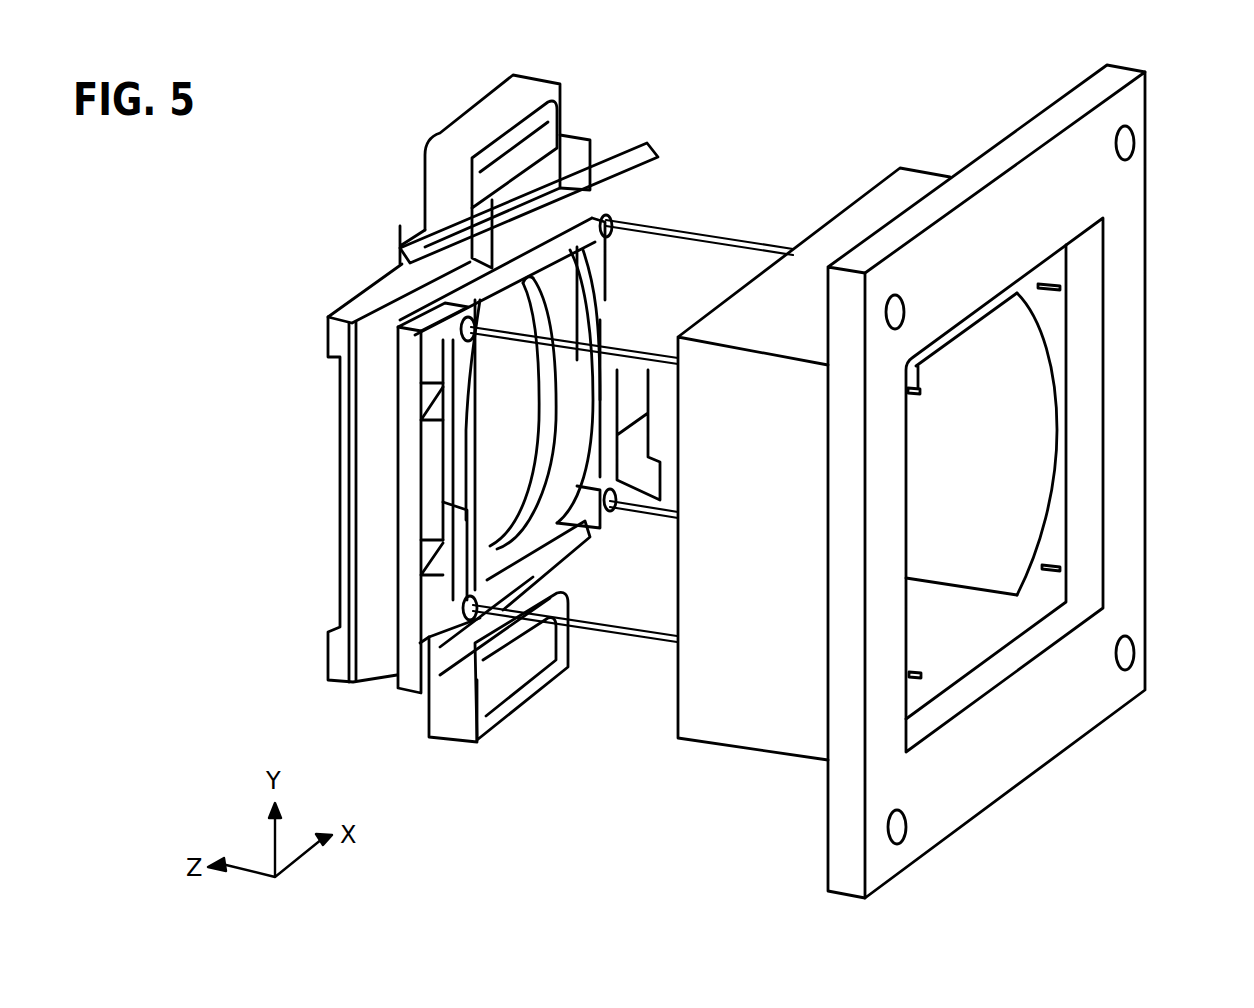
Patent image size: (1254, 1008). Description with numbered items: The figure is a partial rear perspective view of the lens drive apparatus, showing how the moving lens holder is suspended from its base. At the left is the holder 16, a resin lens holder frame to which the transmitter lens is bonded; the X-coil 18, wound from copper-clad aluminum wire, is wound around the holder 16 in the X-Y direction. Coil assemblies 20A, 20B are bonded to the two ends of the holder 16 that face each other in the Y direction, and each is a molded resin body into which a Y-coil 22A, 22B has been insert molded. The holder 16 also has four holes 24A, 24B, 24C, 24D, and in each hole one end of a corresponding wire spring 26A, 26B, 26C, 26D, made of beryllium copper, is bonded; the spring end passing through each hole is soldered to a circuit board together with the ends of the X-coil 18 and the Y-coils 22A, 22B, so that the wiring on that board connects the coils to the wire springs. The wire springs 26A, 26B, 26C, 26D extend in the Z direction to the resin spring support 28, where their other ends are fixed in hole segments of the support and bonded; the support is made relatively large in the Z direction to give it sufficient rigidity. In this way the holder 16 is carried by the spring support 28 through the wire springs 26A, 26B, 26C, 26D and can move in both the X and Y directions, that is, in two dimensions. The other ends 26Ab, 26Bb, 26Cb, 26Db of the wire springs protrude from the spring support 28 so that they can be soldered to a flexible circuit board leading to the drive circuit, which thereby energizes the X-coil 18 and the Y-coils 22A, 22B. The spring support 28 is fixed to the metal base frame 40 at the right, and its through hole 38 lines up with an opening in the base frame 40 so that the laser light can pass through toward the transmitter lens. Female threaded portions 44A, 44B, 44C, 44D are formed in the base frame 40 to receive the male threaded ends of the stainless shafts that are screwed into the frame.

The holder 16 is at (343, 313).
The X-coil 18 is at (362, 467).
The coil assembly 20A is at (427, 725).
The coil assembly 20B is at (473, 120).
The Y-coil 22A is at (513, 677).
The Y-coil 22B is at (540, 127).
The hole 24A is at (467, 600).
The hole 24B is at (607, 510).
The hole 24C is at (462, 313).
The hole 24D is at (615, 207).
The wire spring 26A is at (617, 632).
The wire spring 26B is at (662, 518).
The wire spring 26C is at (663, 350).
The wire spring 26D is at (750, 242).
The other end of wire spring 26Ab is at (916, 668).
The other end of wire spring 26Bb is at (1061, 568).
The other end of wire spring 26Cb is at (921, 391).
The other end of wire spring 26Db is at (1049, 283).
The spring support 28 is at (918, 183).
The through hole 38 is at (1043, 441).
The base frame 40 is at (1137, 227).
The female threaded portion 44A is at (905, 824).
The female threaded portion 44B is at (1134, 652).
The female threaded portion 44C is at (903, 310).
The female threaded portion 44D is at (1134, 143).